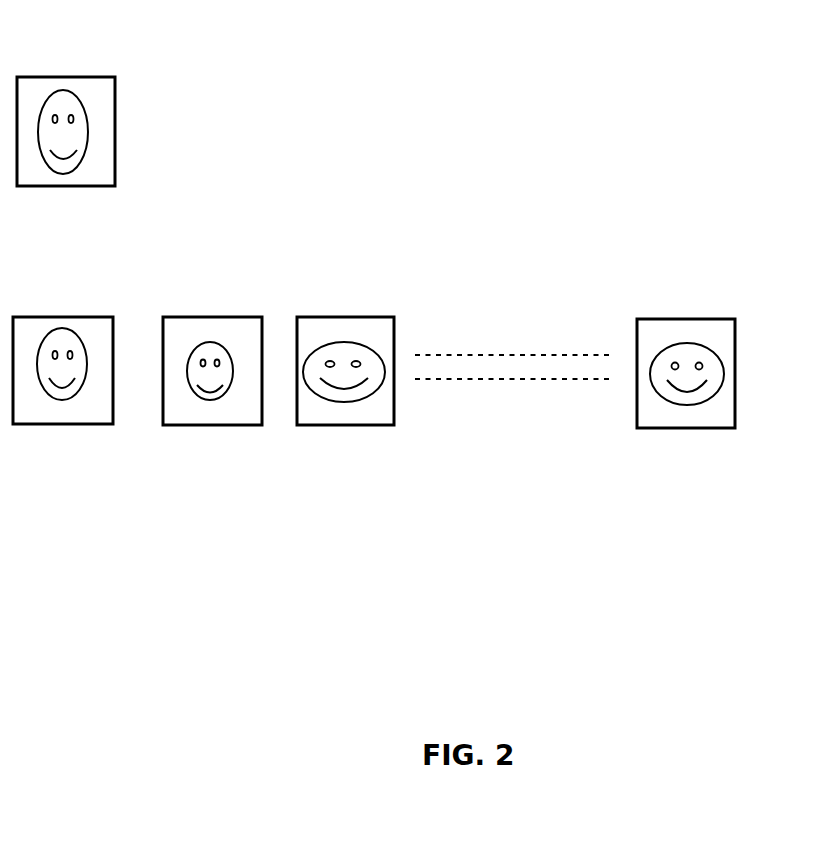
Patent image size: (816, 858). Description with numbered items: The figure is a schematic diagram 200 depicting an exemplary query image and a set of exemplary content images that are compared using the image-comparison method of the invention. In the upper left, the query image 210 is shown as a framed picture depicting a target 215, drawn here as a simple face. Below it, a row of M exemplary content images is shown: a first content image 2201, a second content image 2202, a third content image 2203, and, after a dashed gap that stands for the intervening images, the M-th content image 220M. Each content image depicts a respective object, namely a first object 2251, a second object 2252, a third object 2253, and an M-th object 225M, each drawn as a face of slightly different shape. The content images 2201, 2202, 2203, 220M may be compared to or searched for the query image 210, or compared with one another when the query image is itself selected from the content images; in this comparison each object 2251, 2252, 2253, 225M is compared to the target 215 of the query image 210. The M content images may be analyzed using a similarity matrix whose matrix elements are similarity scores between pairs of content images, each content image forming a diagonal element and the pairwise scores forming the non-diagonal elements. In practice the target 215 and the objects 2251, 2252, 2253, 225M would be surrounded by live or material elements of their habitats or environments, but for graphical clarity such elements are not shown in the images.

The image collection / system 200 is at (709, 30).
The query image 210 is at (50, 77).
The target 215 is at (88, 138).
The content image 2201 is at (39, 317).
The object 2251 is at (56, 400).
The content image 2202 is at (192, 317).
The object 2252 is at (211, 400).
The content image 2203 is at (328, 317).
The object 2253 is at (343, 402).
The content image 220M is at (670, 319).
The object 225M is at (687, 405).